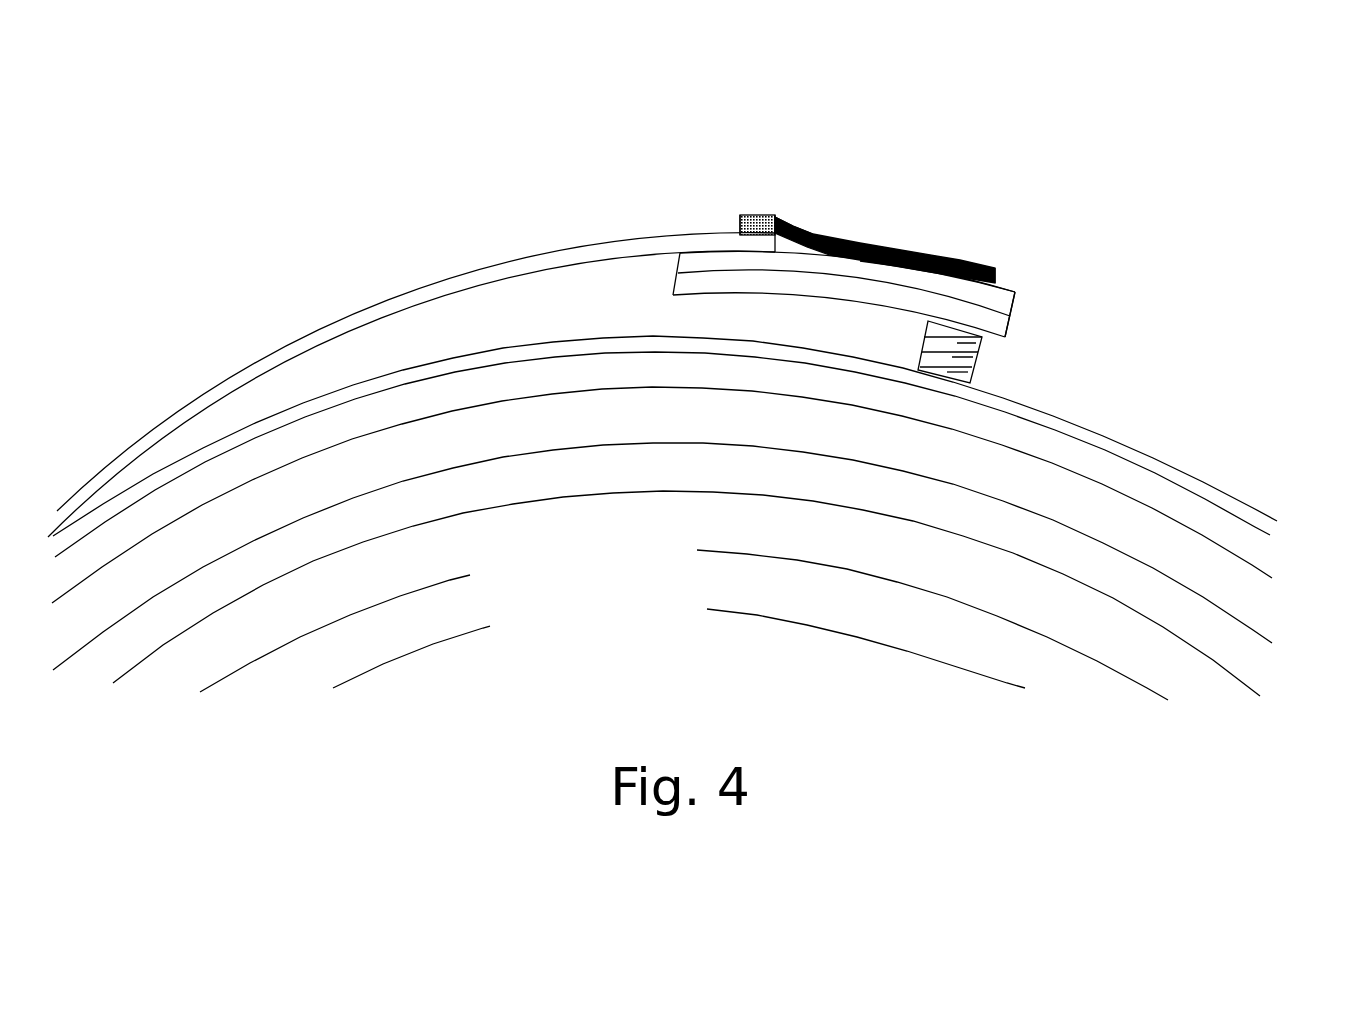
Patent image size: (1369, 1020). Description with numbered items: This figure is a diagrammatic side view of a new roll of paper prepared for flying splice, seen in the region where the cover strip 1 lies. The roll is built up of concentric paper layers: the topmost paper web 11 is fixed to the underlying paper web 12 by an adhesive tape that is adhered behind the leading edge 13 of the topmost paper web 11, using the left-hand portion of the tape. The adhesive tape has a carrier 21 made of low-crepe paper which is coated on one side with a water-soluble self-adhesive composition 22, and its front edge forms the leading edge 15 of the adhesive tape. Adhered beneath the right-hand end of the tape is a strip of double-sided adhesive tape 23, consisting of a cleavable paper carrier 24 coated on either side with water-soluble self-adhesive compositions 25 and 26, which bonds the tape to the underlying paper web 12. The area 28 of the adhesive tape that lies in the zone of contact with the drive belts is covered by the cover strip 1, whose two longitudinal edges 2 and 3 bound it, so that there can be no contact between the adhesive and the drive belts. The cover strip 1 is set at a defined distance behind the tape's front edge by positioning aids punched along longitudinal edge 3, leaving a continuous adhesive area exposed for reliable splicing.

The cover strip 1 is at (890, 245).
The longitudinal edge 2 is at (740, 213).
The longitudinal edge 3 is at (998, 270).
The topmost paper web 11 is at (420, 290).
The underlying paper web 12 is at (1210, 488).
The leading edge of the topmost paper web 13 is at (783, 215).
The leading edge of the adhesive tape 15 is at (1012, 316).
The carrier 21 is at (792, 288).
The self-adhesive composition 22 is at (935, 283).
The double-sided adhesive tape 23 is at (898, 346).
The cleavable paper carrier 24 is at (978, 353).
The self-adhesive composition 25 is at (982, 338).
The self-adhesive composition 26 is at (1000, 378).
The area of the adhesive tape 28 is at (1013, 283).